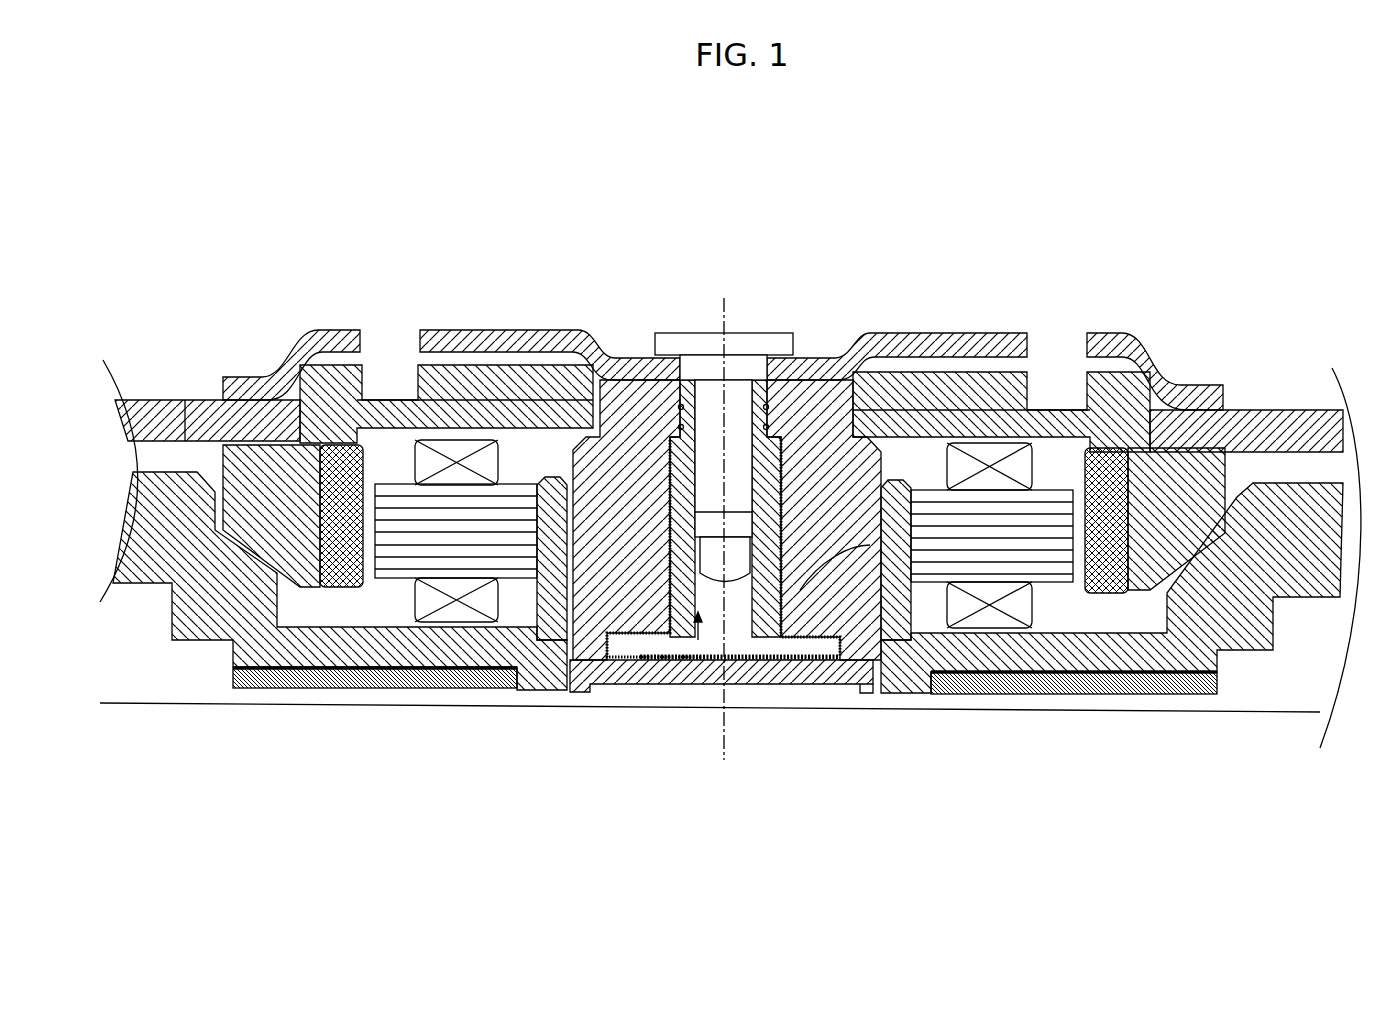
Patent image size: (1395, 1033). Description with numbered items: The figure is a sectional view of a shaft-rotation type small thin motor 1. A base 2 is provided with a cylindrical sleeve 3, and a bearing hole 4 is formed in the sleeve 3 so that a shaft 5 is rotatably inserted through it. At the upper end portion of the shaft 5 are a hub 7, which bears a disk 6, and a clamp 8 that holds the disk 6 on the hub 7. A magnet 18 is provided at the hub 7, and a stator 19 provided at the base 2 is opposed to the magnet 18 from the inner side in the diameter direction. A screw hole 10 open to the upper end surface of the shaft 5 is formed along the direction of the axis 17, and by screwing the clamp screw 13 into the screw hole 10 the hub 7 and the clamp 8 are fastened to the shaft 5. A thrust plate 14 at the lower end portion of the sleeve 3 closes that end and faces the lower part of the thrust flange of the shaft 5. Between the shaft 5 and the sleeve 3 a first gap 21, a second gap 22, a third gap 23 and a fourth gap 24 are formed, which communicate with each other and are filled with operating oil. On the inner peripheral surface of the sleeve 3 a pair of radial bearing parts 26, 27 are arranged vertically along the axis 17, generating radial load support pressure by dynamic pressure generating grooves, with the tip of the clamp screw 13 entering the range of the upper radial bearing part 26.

The motor 1 is at (527, 218).
The base 2 is at (305, 648).
The sleeve 3 is at (597, 458).
The bearing hole 4 is at (665, 635).
The shaft 5 is at (737, 565).
The disk 6 is at (184, 398).
The hub 7 is at (510, 383).
The clamp 8 is at (447, 330).
The screw hole 10 is at (773, 630).
The clamp screw 13 is at (677, 333).
The thrust plate 14 is at (840, 688).
The axis 17 is at (737, 300).
The magnet 18 is at (305, 583).
The stator 19 is at (395, 545).
The first gap 21 is at (560, 600).
The second gap 22 is at (655, 612).
The third gap 23 is at (600, 684).
The fourth gap 24 is at (642, 658).
The radial bearing part 26 is at (855, 447).
The radial bearing part 27 is at (813, 587).